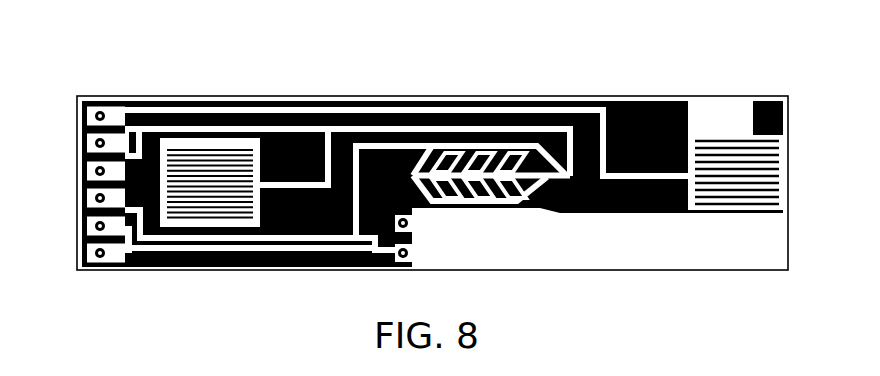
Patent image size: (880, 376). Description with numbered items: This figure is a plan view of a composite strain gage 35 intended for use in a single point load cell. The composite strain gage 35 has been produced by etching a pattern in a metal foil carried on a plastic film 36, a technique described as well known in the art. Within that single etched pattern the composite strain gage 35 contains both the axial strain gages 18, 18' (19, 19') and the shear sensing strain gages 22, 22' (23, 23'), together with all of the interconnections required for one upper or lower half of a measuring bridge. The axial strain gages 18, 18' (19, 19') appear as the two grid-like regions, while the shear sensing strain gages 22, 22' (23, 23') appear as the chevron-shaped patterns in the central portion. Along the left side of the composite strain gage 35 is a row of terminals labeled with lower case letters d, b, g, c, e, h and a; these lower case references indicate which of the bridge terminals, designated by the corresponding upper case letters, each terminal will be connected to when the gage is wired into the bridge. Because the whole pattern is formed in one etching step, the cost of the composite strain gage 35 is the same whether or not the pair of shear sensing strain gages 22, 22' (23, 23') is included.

The axial strain gage 18 is at (210, 141).
The axial strain gage 19 is at (210, 141).
The shear sensing strain gage 22 is at (490, 128).
The shear sensing strain gage 23 is at (490, 128).
The axial strain gage 18' is at (735, 155).
The axial strain gage 19' is at (735, 155).
The shear sensing strain gage 22' is at (480, 220).
The shear sensing strain gage 23' is at (480, 220).
The composite strain gage 35 is at (566, 80).
The plastic film 36 is at (770, 247).
The terminal d is at (82, 117).
The terminal b is at (75, 145).
The terminal g is at (82, 143).
The terminal c is at (82, 172).
The terminal e is at (73, 206).
The terminal h is at (82, 198).
The terminal a is at (82, 225).